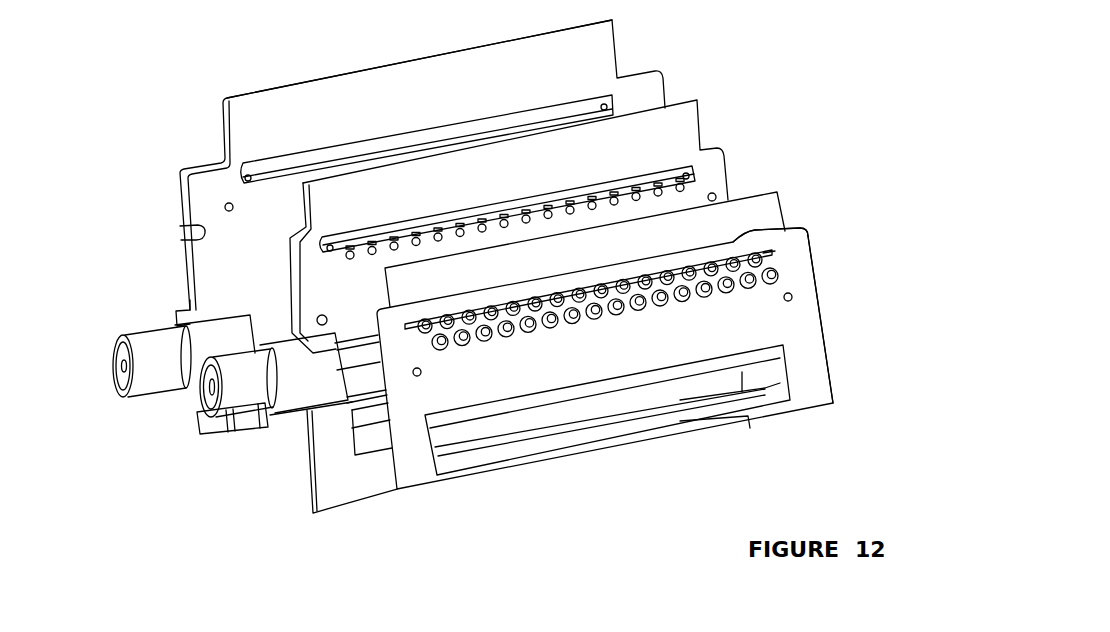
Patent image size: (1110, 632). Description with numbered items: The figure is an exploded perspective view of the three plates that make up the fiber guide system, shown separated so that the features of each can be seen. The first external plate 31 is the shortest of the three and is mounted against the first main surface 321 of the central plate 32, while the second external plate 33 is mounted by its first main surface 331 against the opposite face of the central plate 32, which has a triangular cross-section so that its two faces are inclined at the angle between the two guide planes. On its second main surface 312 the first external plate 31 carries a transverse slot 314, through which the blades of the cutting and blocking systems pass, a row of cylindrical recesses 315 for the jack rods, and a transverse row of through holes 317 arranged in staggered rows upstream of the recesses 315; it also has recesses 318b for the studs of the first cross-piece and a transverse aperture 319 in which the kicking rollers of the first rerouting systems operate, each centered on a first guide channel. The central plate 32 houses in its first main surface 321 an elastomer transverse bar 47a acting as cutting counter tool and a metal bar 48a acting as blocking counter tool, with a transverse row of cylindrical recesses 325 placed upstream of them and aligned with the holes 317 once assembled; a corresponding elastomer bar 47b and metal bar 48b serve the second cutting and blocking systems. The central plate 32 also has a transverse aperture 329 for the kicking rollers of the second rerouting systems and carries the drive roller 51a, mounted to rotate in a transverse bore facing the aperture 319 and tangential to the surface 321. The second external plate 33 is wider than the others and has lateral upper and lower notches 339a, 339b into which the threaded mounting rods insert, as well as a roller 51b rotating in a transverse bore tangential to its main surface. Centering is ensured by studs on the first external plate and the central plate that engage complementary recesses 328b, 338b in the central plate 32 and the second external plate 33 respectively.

The first external plate 31 is at (816, 350).
The second main surface of the first external plate 312 is at (818, 387).
The transverse slot 314 is at (775, 252).
The cylindrical recesses 315 is at (733, 242).
The through holes 317 is at (554, 328).
The recesses 318b is at (792, 298).
The transverse aperture 319 is at (765, 392).
The central plate 32 is at (717, 167).
The first main surface of the central plate 321 is at (313, 285).
The cylindrical recesses 325 is at (713, 186).
The recess 328b is at (330, 327).
The transverse aperture 329 is at (366, 426).
The second external plate 33 is at (663, 92).
The first main surface of the second external plate 331 is at (590, 53).
The recess 338b is at (228, 211).
The lower notch 339b is at (182, 235).
The upper notch 339a is at (193, 405).
The elastomer transverse bar 47a is at (665, 170).
The transverse elastomer bar 47b is at (327, 150).
The metal bar 48a is at (684, 171).
The metal bar 48b is at (407, 147).
The drive roller 51a is at (354, 356).
The roller 51b is at (115, 361).